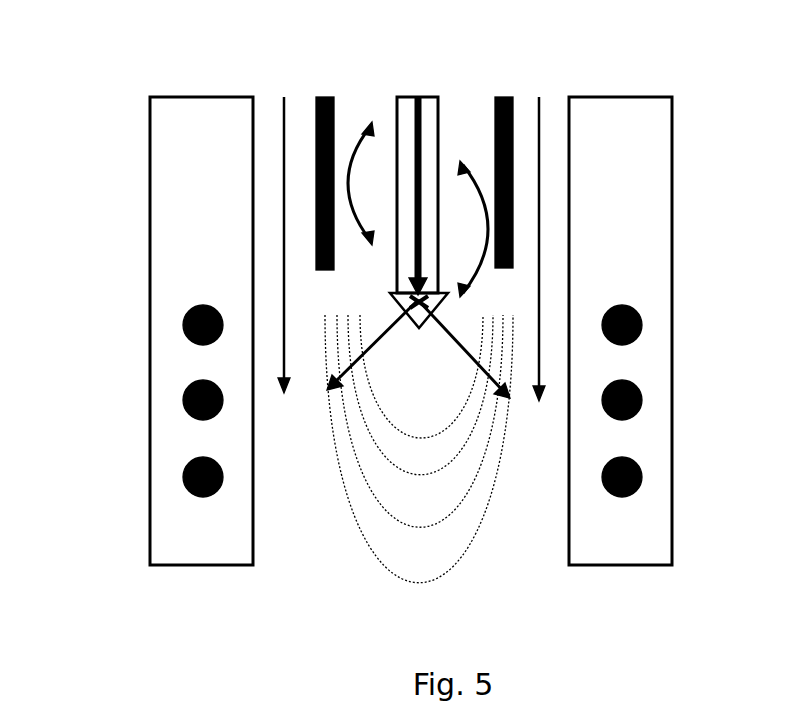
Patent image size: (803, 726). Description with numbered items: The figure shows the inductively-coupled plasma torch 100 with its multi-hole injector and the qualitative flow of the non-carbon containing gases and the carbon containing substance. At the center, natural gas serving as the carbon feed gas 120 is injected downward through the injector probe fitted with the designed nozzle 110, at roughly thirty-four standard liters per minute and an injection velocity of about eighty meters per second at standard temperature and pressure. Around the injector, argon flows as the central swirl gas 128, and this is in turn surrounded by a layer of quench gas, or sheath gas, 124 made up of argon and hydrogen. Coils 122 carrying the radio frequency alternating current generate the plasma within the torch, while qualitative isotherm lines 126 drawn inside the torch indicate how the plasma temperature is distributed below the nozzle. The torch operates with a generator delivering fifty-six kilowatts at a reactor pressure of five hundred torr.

The ICP torch 100 is at (296, 82).
The nozzle 110 is at (437, 245).
The carbon feed gas 120 is at (410, 235).
The coils 122 is at (183, 330).
The quench gas (sheath gas) 124 is at (289, 393).
The qualitative isotherm lines 126 is at (475, 488).
The central swirl gas 128 is at (470, 185).